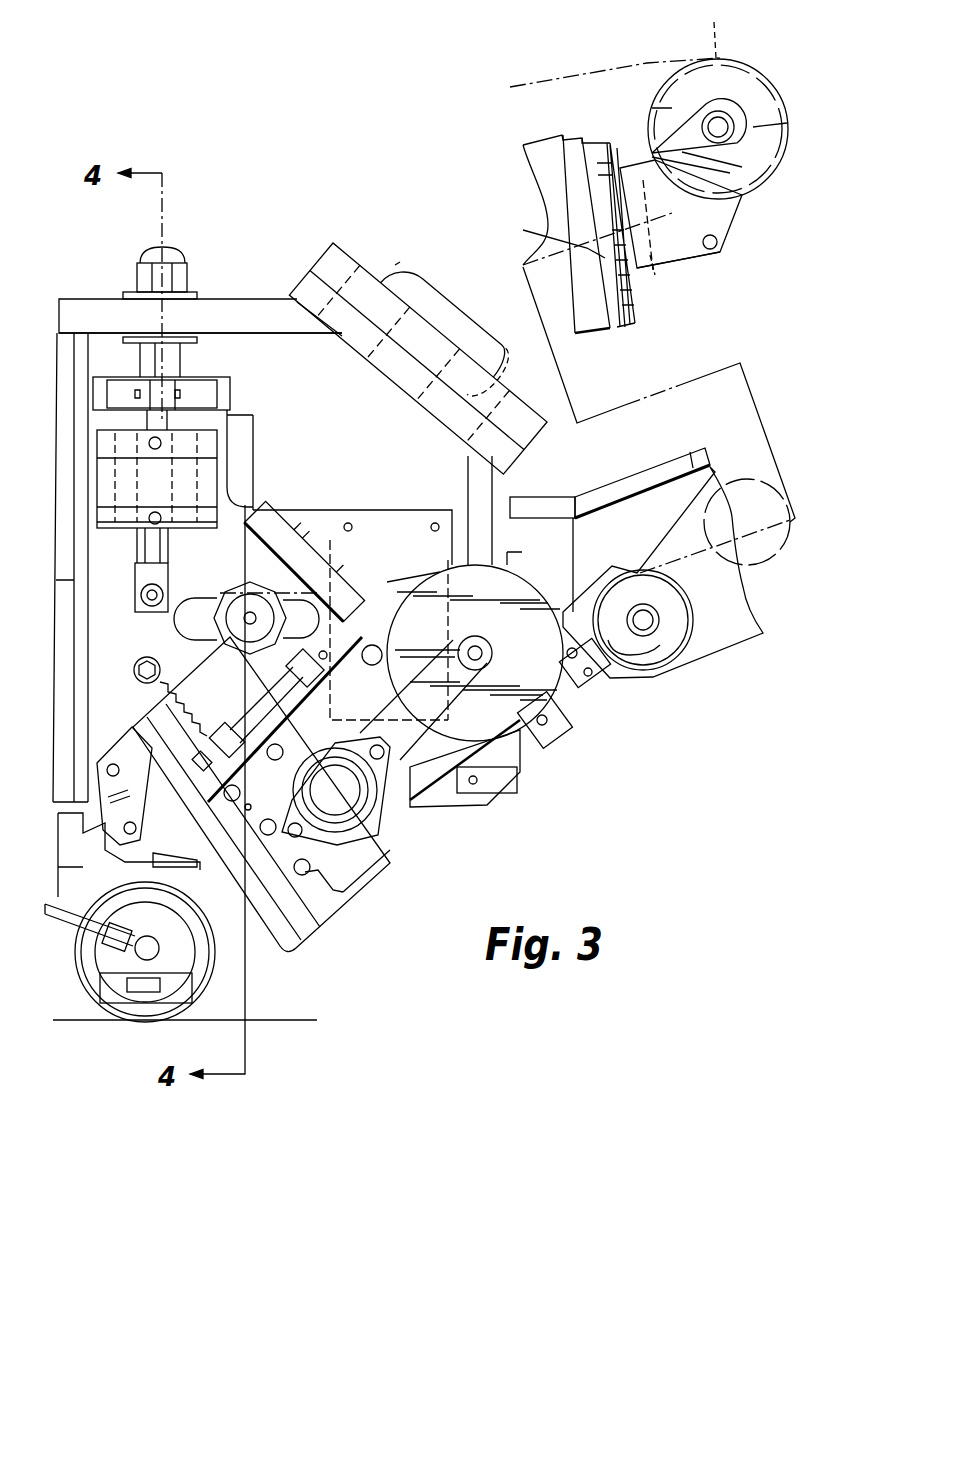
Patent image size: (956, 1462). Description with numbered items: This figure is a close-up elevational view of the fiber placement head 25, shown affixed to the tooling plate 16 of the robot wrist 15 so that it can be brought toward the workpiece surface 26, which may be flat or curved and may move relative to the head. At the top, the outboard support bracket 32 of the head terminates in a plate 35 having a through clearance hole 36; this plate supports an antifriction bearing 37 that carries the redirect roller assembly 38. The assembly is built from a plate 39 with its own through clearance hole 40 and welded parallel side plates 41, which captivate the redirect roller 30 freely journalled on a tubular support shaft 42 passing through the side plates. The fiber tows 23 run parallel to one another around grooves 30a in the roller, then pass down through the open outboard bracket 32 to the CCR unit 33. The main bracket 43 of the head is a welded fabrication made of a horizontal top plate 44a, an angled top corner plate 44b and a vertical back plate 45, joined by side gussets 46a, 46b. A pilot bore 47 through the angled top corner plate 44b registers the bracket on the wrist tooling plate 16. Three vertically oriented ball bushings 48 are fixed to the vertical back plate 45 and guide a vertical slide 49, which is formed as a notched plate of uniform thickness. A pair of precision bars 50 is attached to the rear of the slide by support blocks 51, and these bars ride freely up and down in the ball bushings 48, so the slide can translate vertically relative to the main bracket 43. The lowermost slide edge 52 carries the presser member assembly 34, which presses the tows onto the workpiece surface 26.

The wrist 15 is at (392, 262).
The wrist tooling plate 16 is at (327, 245).
The fiber tows 23 is at (576, 75).
The fiber placement head 25 is at (260, 262).
The workpiece surface 26 is at (290, 1020).
The redirect roller 30 is at (738, 63).
The grooves 30a is at (718, 29).
The outboard support bracket 32 is at (645, 470).
The CCR unit 33 is at (392, 890).
The presser member assembly 34 is at (78, 975).
The plate 35 is at (628, 333).
The through clearance hole 36 is at (553, 234).
The antifriction bearing 37 is at (650, 300).
The redirect roller assembly 38 is at (722, 258).
The plate 39 is at (675, 262).
The through clearance hole 40 is at (652, 235).
The parallel side plates 41 is at (733, 225).
The tubular support shaft 42 is at (730, 118).
The main bracket 43 is at (224, 297).
The horizontal top plate 44a is at (243, 338).
The angled top corner plate 44b is at (353, 355).
The vertical back plate 45 is at (381, 460).
The side gusset 46a is at (77, 653).
The side gusset 46b is at (466, 455).
The pilot bore 47 is at (438, 292).
The ball bushings 48 is at (185, 530).
The vertical slide 49 is at (232, 460).
The precision bars 50 is at (133, 540).
The support blocks 51 is at (228, 395).
The lowermost slide edge 52 is at (75, 885).